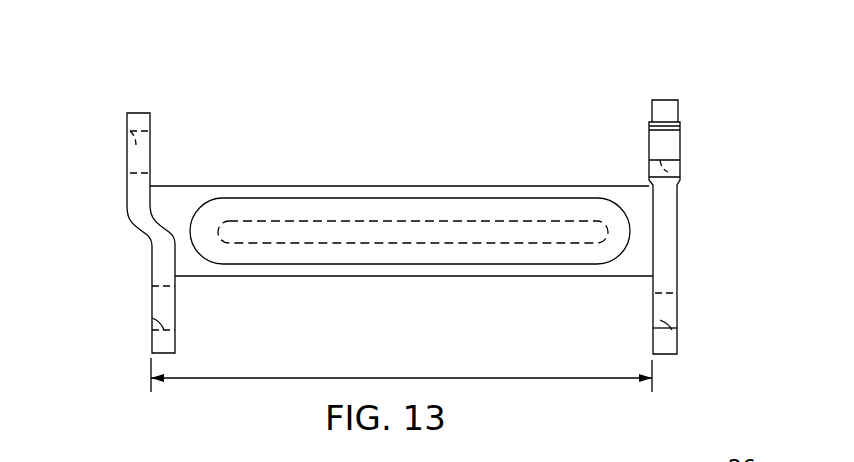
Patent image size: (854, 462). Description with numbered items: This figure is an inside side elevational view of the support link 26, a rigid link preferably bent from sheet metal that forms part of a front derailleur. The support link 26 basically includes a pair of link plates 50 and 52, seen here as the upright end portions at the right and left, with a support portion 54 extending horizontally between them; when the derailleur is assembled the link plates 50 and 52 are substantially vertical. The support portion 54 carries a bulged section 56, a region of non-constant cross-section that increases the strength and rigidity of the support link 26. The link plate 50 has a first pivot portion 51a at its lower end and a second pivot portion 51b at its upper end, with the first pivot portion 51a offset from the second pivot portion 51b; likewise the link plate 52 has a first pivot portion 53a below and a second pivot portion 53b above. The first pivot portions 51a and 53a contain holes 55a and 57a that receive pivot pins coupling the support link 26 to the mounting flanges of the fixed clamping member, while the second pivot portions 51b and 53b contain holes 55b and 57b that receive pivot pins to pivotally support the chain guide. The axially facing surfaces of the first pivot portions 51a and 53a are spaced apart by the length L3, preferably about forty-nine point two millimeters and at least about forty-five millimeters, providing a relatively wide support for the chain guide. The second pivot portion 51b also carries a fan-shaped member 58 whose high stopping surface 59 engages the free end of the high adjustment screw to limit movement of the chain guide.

The support link 26 is at (522, 119).
The link plate 50 is at (683, 109).
The first pivot portion 51a is at (679, 344).
The second pivot portion 51b is at (681, 143).
The link plate 52 is at (155, 202).
The first pivot portion 53a is at (152, 340).
The second pivot portion 53b is at (152, 141).
The support portion 54 is at (362, 185).
The hole 55a is at (665, 324).
The hole 55b is at (662, 171).
The bulged section 56 is at (429, 210).
The hole 57a is at (151, 313).
The hole 57b is at (136, 143).
The fan-shaped member 58 is at (682, 130).
The high stopping surface 59 is at (662, 116).
The length L3 is at (391, 378).